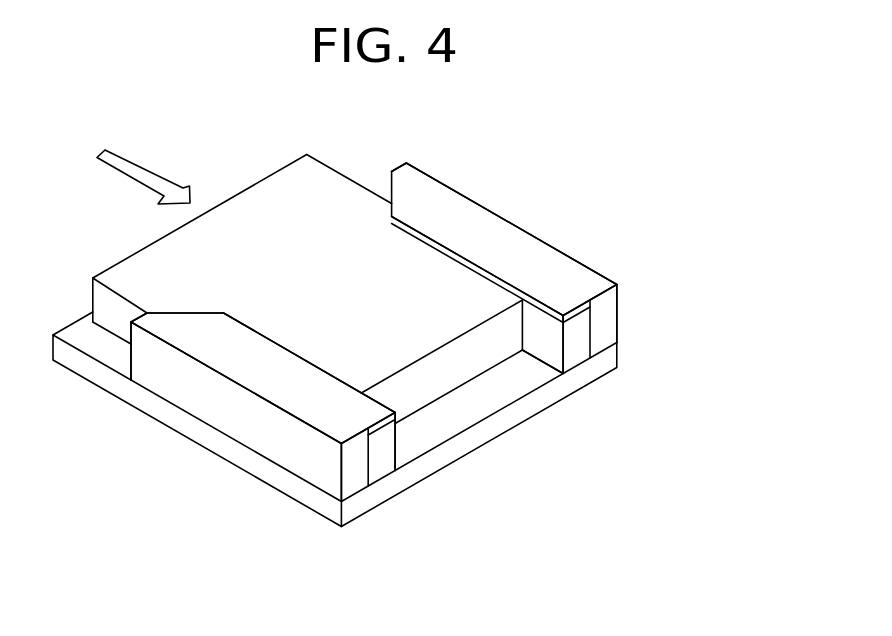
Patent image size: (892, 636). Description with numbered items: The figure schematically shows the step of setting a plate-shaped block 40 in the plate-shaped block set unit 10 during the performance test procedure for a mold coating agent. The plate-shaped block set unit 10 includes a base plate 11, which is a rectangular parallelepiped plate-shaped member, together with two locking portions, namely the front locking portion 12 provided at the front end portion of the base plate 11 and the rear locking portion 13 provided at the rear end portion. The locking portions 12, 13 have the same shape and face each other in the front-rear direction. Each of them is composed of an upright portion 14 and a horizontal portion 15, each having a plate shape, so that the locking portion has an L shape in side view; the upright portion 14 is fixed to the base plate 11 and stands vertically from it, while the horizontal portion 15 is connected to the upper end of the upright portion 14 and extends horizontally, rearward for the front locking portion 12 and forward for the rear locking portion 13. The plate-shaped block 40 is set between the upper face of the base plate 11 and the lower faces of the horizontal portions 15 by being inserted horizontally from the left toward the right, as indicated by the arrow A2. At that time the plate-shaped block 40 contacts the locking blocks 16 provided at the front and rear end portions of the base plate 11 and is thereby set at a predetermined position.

The plate-shaped block set unit 10 is at (514, 194).
The base plate 11 is at (472, 440).
The front locking portion 12 is at (698, 218).
The rear locking portion 13 is at (268, 561).
The upright portion 14 is at (210, 401).
The horizontal portion 15 is at (288, 382).
The locking block 16 is at (386, 452).
The plate-shaped block 40 is at (140, 285).
The arrow A2 is at (134, 176).